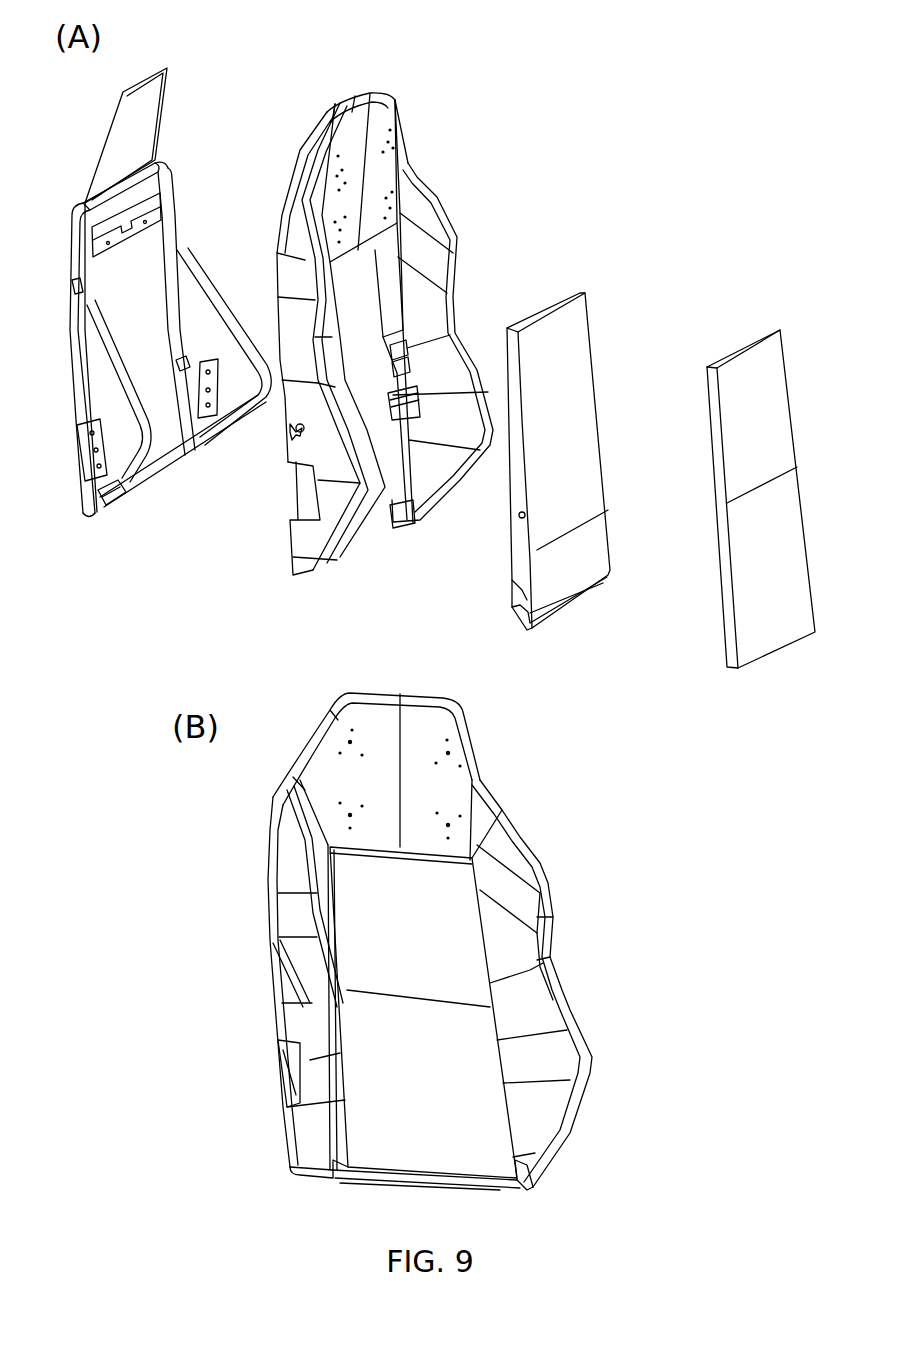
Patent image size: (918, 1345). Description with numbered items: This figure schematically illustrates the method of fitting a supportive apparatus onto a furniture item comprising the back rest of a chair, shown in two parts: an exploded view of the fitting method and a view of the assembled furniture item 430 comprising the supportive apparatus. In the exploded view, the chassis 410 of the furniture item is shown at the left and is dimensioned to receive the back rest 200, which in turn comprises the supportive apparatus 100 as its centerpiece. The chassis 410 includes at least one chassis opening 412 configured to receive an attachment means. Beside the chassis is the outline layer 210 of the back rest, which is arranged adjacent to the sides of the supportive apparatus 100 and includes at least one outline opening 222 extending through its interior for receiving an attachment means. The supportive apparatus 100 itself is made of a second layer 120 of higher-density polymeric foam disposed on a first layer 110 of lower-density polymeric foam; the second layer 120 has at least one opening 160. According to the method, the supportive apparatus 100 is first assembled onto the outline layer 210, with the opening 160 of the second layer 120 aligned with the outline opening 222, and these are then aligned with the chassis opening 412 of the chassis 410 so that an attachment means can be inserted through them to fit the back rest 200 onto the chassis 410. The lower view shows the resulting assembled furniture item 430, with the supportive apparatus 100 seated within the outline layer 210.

The supportive apparatus 100 is at (520, 277).
The first layer 110 is at (761, 499).
The second layer 120 is at (558, 461).
The opening of the second layer 160 is at (519, 519).
The back rest 200 is at (805, 88).
The outline layer 210 is at (428, 206).
The outline opening 222 is at (292, 432).
The chassis 410 is at (172, 176).
The chassis opening 412 is at (118, 505).
The assembled furniture item 430 is at (578, 1020).